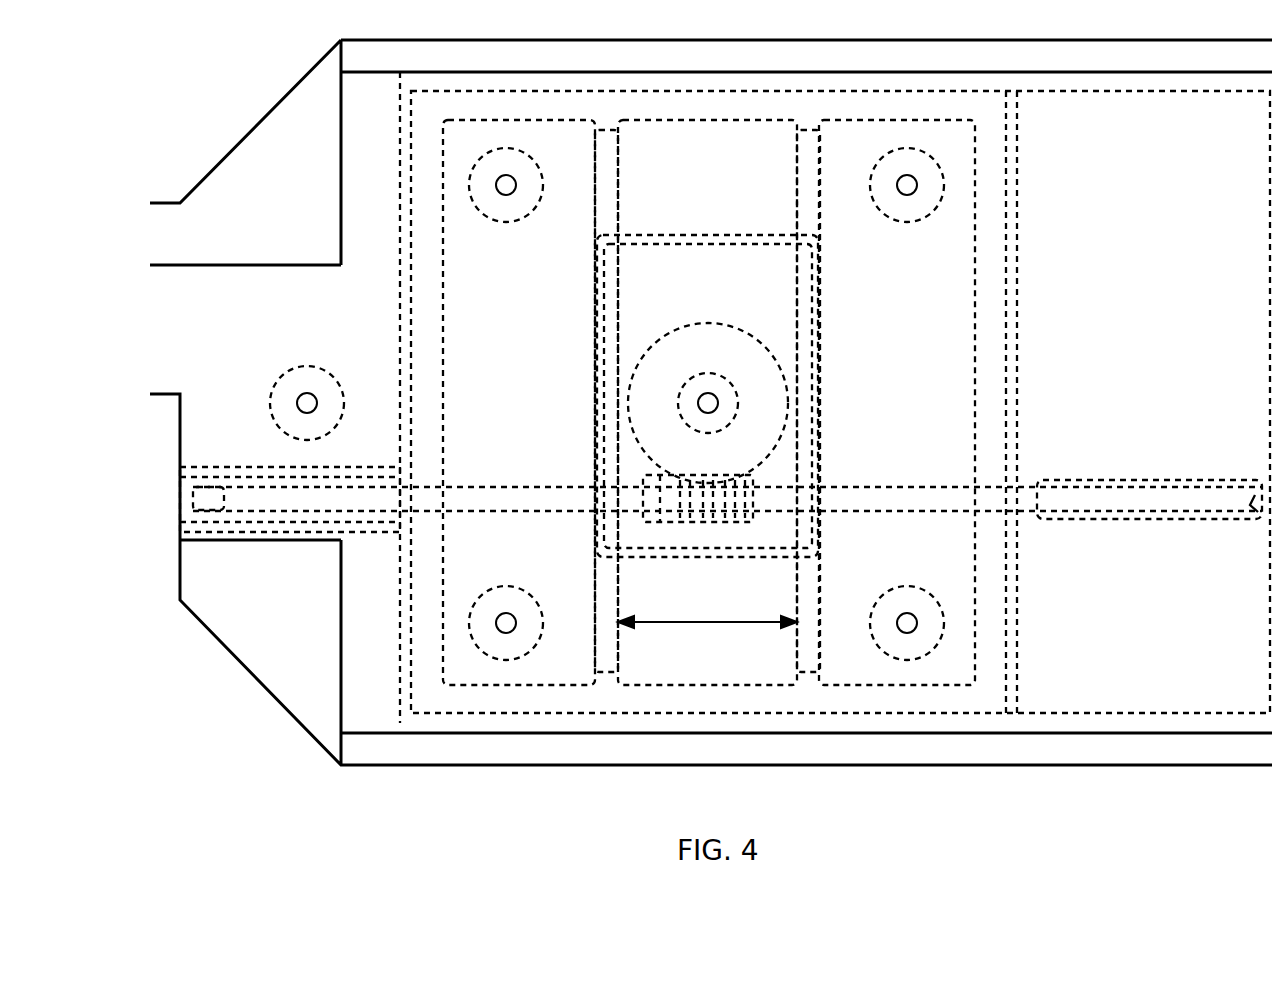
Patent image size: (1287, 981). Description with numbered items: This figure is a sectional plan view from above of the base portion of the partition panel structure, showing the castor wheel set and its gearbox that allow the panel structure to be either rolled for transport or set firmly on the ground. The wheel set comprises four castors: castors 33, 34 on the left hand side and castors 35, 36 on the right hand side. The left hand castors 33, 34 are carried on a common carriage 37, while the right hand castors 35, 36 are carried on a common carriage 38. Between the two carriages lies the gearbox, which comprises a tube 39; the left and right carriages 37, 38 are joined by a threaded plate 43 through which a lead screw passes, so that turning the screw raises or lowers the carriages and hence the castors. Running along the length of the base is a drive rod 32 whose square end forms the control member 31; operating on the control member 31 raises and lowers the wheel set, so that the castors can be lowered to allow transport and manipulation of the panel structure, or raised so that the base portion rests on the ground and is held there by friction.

The control member 31 is at (214, 487).
The drive rod 32 is at (266, 487).
The castor 33 is at (535, 645).
The castor 34 is at (535, 205).
The castor 35 is at (883, 651).
The castor 36 is at (884, 156).
The carriage 37 is at (443, 277).
The carriage 38 is at (975, 312).
The tube 39 is at (655, 235).
The threaded plate 43 is at (717, 621).